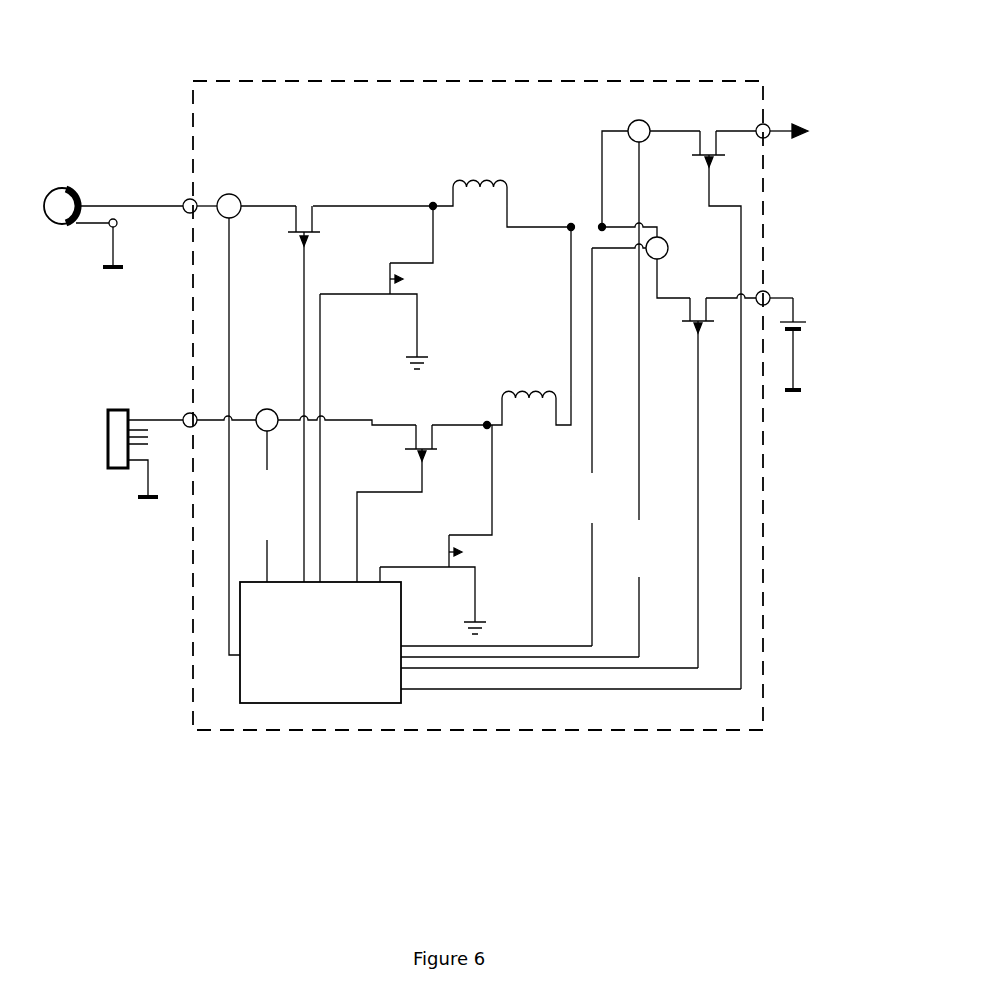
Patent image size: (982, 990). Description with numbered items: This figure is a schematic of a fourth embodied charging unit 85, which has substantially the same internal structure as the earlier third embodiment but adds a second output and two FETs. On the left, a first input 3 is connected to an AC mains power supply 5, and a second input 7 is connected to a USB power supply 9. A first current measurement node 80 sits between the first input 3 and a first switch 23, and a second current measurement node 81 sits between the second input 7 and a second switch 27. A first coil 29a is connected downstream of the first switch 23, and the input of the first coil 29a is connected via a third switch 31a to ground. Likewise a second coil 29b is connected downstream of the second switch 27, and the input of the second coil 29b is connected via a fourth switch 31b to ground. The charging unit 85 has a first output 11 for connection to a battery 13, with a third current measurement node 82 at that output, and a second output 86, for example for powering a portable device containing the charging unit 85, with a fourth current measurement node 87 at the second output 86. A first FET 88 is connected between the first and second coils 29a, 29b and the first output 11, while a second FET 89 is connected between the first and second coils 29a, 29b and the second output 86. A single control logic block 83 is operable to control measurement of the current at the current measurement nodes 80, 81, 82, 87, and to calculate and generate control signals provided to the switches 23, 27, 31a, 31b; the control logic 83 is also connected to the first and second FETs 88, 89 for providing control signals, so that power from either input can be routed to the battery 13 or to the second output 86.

The AC mains power supply 5 is at (69, 186).
The first input 3 is at (185, 198).
The first current measurement node 80 is at (225, 193).
The first switch 23 is at (306, 196).
The first coil 29a is at (466, 181).
The third switch 31a is at (428, 287).
The second input 7 is at (187, 411).
The second current measurement node 81 is at (267, 408).
The USB power supply 9 is at (106, 475).
The second switch 27 is at (426, 418).
The second coil 29b is at (516, 394).
The fourth switch 31b is at (480, 548).
The control logic block 83 is at (273, 693).
The fourth embodied charging unit 85 is at (338, 79).
The fourth current measurement node 87 is at (651, 140).
The third current measurement node 82 is at (667, 246).
The first FET 88 is at (697, 296).
The second FET 89 is at (711, 128).
The second output 86 is at (768, 126).
The first output 11 is at (768, 293).
The battery 13 is at (805, 322).